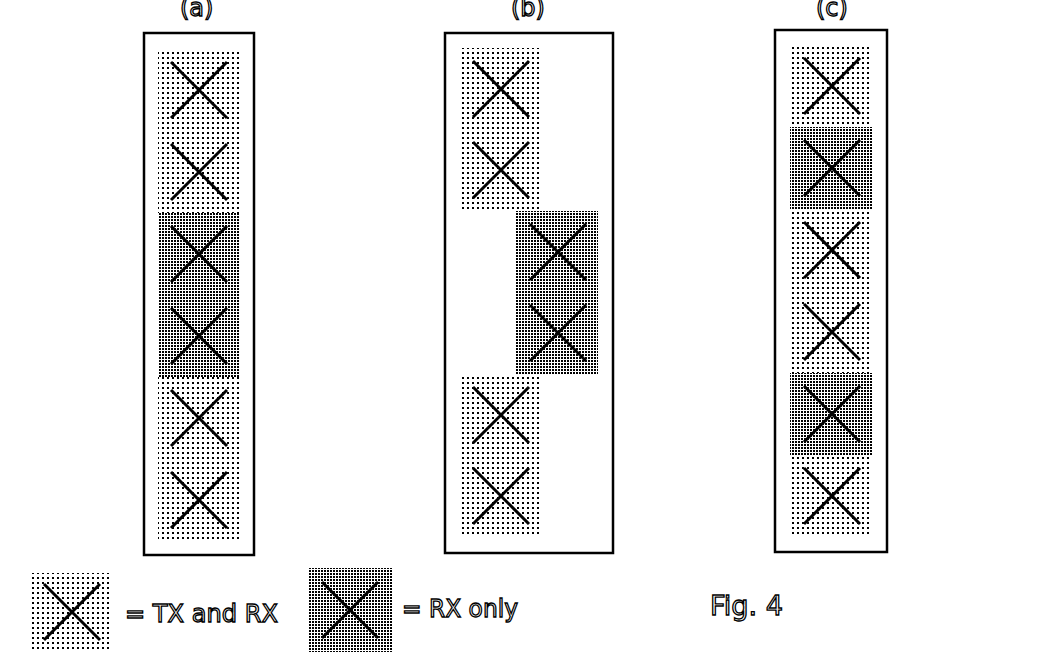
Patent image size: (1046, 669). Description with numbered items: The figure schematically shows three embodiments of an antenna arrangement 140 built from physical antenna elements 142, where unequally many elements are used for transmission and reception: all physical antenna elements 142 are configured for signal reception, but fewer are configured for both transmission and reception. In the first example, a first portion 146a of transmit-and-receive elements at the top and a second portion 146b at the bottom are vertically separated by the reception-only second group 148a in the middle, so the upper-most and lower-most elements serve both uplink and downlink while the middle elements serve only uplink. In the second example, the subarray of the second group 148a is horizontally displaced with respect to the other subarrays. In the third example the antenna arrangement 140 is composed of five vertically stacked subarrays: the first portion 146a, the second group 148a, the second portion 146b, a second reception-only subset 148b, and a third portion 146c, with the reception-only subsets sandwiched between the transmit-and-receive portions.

The antenna arrangement 140 is at (144, 265).
The physical antenna element 142 is at (198, 90).
The first portion of physical antenna elements configured for both transmission and 146a is at (160, 140).
The second portion of physical antenna elements configured for both transmission and 146b is at (158, 460).
The third portion of physical antenna elements configured for both transmission and 146c is at (795, 485).
The second group of physical antenna elements configured for only signal reception 148a is at (158, 333).
The second subset of physical antenna elements configured for only signal reception 148b is at (795, 427).